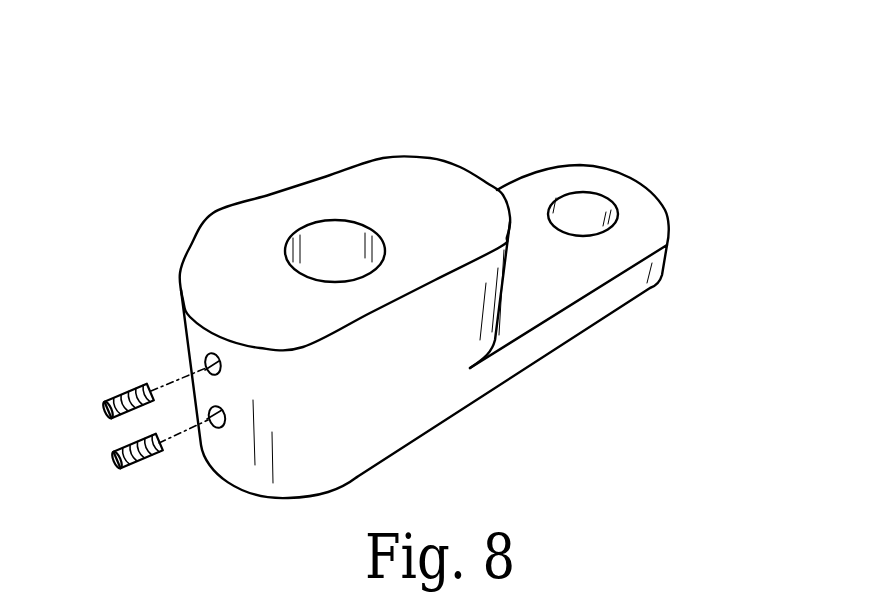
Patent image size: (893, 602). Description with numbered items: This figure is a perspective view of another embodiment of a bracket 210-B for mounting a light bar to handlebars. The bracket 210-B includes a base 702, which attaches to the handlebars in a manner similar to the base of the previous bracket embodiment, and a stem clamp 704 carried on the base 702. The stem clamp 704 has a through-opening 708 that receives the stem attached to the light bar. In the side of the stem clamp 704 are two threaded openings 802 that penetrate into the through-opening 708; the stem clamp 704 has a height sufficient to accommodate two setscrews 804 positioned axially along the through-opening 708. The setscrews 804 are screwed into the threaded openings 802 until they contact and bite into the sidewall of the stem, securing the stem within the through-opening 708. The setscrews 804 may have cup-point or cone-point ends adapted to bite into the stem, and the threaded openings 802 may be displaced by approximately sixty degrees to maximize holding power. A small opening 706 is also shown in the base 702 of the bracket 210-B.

The bracket 210-B is at (656, 110).
The base 702 is at (608, 171).
The stem clamp 704 is at (420, 158).
The tab aperture 706 is at (615, 208).
The through-opening 708 is at (333, 220).
The threaded openings 802 is at (220, 406).
The setscrews 804 is at (132, 387).